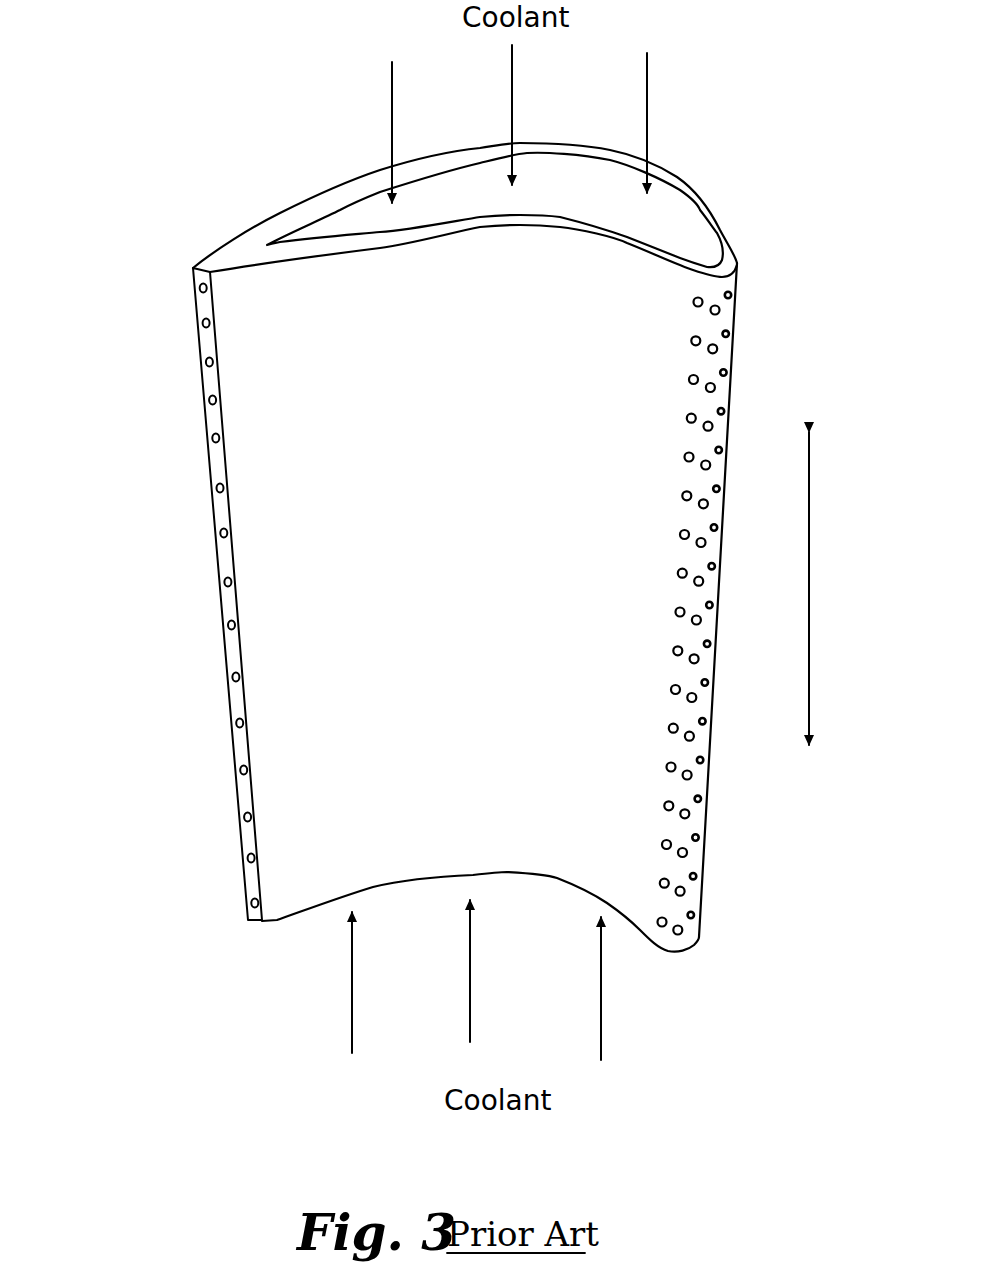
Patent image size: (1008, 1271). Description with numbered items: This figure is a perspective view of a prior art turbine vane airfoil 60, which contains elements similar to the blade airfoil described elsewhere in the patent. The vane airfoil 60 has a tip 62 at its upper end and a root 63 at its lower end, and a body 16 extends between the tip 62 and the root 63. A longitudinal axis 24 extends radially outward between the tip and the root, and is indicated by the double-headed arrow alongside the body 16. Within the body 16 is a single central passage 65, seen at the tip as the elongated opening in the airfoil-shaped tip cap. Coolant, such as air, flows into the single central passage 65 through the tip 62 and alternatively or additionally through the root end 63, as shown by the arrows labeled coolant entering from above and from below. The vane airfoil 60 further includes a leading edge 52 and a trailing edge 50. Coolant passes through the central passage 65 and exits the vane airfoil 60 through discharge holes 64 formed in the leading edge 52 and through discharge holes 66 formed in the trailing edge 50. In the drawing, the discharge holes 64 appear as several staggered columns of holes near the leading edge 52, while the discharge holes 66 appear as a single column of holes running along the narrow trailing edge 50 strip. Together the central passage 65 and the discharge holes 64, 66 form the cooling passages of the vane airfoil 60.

The body 16 is at (317, 565).
The longitudinal axis 24 is at (831, 588).
The trailing edge 50 is at (212, 488).
The leading edge 52 is at (732, 362).
The vane airfoil 60 is at (893, 318).
The tip 62 is at (690, 196).
The root 63 is at (577, 888).
The discharge holes 64 is at (702, 838).
The central passage 65 is at (558, 183).
The discharge holes 66 is at (243, 858).